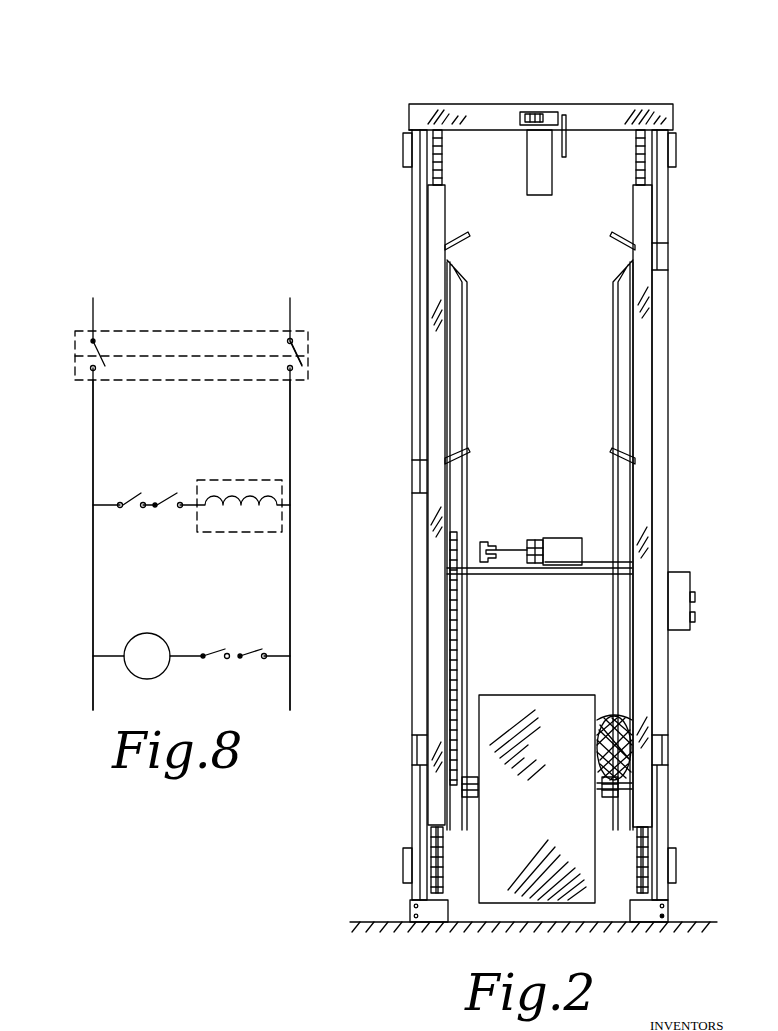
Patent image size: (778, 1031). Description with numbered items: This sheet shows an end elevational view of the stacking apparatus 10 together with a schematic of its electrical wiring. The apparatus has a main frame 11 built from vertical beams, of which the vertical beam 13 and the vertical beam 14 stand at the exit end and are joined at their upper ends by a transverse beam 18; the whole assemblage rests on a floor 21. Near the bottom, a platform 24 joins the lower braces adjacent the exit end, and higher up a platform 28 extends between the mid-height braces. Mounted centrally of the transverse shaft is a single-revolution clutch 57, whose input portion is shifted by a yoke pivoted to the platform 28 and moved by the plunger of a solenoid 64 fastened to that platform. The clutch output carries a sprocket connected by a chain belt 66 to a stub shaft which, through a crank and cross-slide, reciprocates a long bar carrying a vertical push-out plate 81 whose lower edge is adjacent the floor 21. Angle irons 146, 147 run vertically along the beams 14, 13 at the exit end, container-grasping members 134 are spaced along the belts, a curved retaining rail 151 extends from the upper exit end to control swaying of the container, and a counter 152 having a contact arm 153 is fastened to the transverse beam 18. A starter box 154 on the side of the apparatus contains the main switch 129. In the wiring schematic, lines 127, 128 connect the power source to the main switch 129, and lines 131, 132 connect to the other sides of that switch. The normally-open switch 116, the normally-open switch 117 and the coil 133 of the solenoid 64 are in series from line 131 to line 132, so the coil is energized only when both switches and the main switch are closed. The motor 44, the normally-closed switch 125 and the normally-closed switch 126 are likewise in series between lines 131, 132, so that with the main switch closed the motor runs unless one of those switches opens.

In FIG. 2, the stacking apparatus 10 is at (455, 104).
In FIG. 2, the main frame 11 is at (668, 306).
In FIG. 2, the vertical beam 13 is at (418, 398).
In FIG. 2, the vertical beam 14 is at (668, 436).
In FIG. 2, the transverse beam 18 is at (624, 104).
In FIG. 2, the floor 21 is at (700, 922).
In FIG. 2, the platform 24 is at (468, 800).
In FIG. 2, the platform 28 is at (560, 574).
In FIG. 8, the motor 44 is at (148, 633).
In FIG. 2, the single-revolution clutch 57 is at (474, 545).
In FIG. 8, the solenoid 64 is at (242, 532).
In FIG. 2, the solenoid 64 is at (561, 538).
In FIG. 2, the chain belt 66 is at (458, 626).
In FIG. 2, the push-out plate 81 is at (549, 702).
In FIG. 8, the normally-open switch 116 is at (130, 496).
In FIG. 8, the normally-open switch 117 is at (166, 497).
In FIG. 8, the normally-closed switch 125 is at (218, 650).
In FIG. 8, the normally-closed switch 126 is at (256, 650).
In FIG. 8, the line 127 is at (93, 310).
In FIG. 8, the line 128 is at (290, 310).
In FIG. 8, the main switch 129 is at (298, 353).
In FIG. 8, the line 131 is at (93, 592).
In FIG. 8, the line 132 is at (290, 458).
In FIG. 8, the coil 133 is at (240, 480).
In FIG. 2, the container-grasping member 134 is at (608, 236).
In FIG. 2, the angle iron 146 is at (640, 797).
In FIG. 2, the angle iron 147 is at (434, 814).
In FIG. 2, the curved retaining rail 151 is at (527, 178).
In FIG. 2, the counter 152 is at (546, 112).
In FIG. 2, the contact arm 153 is at (568, 145).
In FIG. 8, the starter box 154 is at (72, 356).
In FIG. 2, the starter box 154 is at (678, 622).